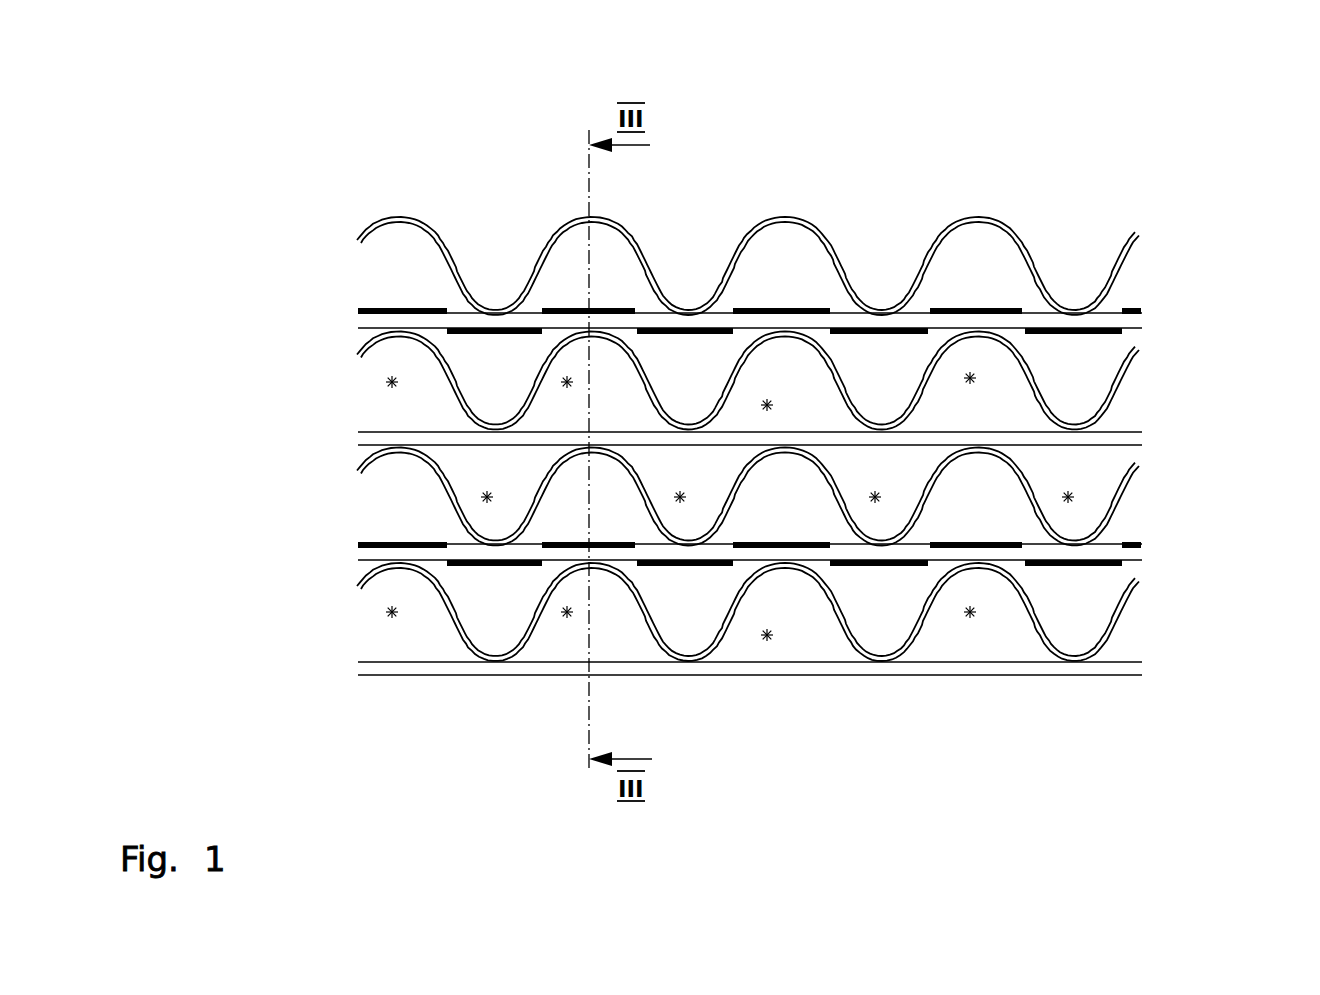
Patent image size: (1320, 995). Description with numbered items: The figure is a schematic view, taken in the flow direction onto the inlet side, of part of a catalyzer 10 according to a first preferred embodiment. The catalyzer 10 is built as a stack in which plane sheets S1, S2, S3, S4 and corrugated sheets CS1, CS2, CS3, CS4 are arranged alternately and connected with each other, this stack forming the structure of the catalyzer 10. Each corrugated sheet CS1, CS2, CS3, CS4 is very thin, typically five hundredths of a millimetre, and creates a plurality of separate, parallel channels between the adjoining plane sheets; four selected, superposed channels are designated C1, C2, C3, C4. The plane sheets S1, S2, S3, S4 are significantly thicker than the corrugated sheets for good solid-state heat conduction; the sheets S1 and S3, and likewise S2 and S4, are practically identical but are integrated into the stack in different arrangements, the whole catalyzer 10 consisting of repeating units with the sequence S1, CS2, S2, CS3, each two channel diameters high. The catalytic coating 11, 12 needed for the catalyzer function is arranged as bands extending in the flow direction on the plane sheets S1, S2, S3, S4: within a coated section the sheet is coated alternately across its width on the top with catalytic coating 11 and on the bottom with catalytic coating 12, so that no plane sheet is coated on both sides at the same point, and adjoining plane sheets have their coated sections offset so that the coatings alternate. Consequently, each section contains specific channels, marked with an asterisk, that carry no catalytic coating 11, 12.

The catalyzer 10 is at (820, 452).
The catalytic coating 11 is at (990, 310).
The catalytic coating 12 is at (866, 348).
The corrugated sheet CS1 is at (1120, 267).
The corrugated sheet CS2 is at (1120, 383).
The corrugated sheet CS3 is at (1120, 498).
The corrugated sheet CS4 is at (1120, 613).
The plane sheet S1 is at (1108, 320).
The plane sheet S2 is at (1108, 436).
The plane sheet S3 is at (1108, 553).
The plane sheet S4 is at (1108, 667).
The channel C1 is at (784, 263).
The channel C2 is at (784, 378).
The channel C3 is at (784, 493).
The channel C4 is at (784, 608).